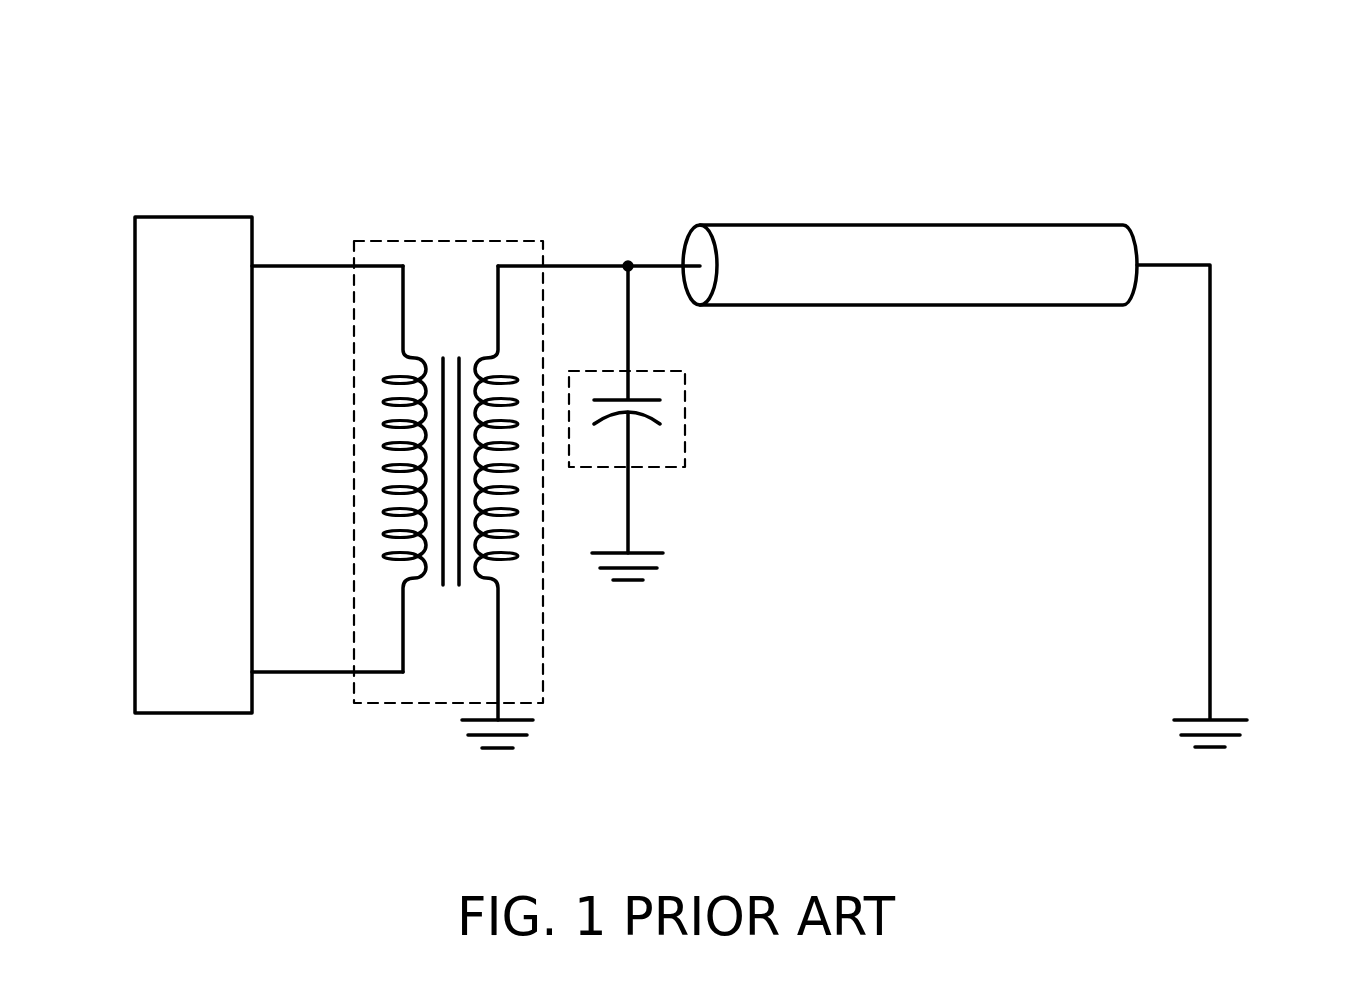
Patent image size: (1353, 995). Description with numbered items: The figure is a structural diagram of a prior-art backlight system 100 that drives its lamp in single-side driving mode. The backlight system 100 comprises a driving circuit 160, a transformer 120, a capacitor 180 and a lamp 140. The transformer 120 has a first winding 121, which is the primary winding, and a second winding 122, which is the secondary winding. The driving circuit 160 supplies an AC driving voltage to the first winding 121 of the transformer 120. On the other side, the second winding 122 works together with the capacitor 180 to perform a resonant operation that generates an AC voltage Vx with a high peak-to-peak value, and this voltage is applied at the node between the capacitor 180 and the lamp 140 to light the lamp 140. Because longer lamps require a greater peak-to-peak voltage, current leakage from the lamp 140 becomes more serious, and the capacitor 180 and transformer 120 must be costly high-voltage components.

The backlight system 100 is at (1162, 116).
The transformer 120 is at (402, 240).
The first winding 121 is at (383, 534).
The second winding 122 is at (518, 534).
The lamp 140 is at (907, 287).
The driving circuit 160 is at (165, 217).
The capacitor 180 is at (686, 448).